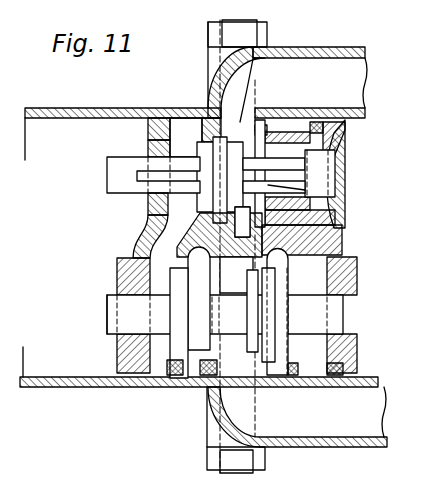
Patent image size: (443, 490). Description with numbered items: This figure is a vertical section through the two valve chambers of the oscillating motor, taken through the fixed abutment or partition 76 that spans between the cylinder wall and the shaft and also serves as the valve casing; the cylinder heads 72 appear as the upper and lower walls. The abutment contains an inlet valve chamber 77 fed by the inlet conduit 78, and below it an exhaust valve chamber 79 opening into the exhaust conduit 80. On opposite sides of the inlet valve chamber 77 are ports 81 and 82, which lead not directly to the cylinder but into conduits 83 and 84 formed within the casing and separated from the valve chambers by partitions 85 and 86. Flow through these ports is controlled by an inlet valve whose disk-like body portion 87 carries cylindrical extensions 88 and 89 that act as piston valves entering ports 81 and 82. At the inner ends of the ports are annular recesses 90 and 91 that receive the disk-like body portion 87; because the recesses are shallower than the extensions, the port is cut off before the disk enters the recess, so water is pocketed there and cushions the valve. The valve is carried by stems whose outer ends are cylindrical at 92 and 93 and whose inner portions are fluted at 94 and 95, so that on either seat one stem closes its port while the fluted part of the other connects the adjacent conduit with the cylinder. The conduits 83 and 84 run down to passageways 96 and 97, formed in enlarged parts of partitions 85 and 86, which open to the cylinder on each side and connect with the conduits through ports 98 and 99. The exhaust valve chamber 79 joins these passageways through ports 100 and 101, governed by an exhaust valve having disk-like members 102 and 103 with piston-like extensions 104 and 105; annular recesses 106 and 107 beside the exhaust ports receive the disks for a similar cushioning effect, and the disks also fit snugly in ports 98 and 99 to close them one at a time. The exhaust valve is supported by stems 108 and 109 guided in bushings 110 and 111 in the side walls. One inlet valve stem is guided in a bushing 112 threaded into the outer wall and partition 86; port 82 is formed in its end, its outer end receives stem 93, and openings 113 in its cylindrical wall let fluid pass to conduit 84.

The cylinder head 72 is at (133, 108).
The abutment or partition 76 is at (160, 118).
The inlet valve chamber 77 is at (262, 50).
The inlet conduit 78 is at (297, 64).
The exhaust valve chamber 79 is at (240, 350).
The exhaust conduit 80 is at (288, 430).
The port 81 is at (195, 148).
The port 82 is at (281, 133).
The conduit 83 is at (182, 207).
The conduit 84 is at (310, 245).
The partition 85 is at (200, 228).
The partition 86 is at (278, 236).
The disk-like body portion 87 is at (221, 219).
The cylindrical extension 88 is at (157, 147).
The cylindrical extension 89 is at (333, 157).
The annular recess 90 is at (200, 106).
The annular recess 91 is at (253, 119).
The cylindrical portion of valve stem 92 is at (107, 173).
The cylindrical portion of valve stem 93 is at (320, 178).
The fluted portion of valve stem 94 is at (157, 188).
The fluted portion of valve stem 95 is at (287, 183).
The passageway 96 is at (200, 350).
The passageway 97 is at (280, 362).
The port 98 is at (167, 368).
The port 99 is at (307, 355).
The exhaust port 100 is at (196, 291).
The exhaust port 101 is at (255, 345).
The disk-like valve member 102 is at (120, 344).
The disk-like valve member 103 is at (272, 287).
The piston-like extension 104 is at (182, 294).
The piston-like extension 105 is at (345, 301).
The annular recess 106 is at (207, 270).
The annular recess 107 is at (290, 266).
The stem 108 is at (120, 304).
The stem 109 is at (357, 298).
The bushing 110 is at (155, 334).
The bushing 111 is at (357, 343).
The bushing 112 is at (340, 132).
The openings 113 is at (292, 203).